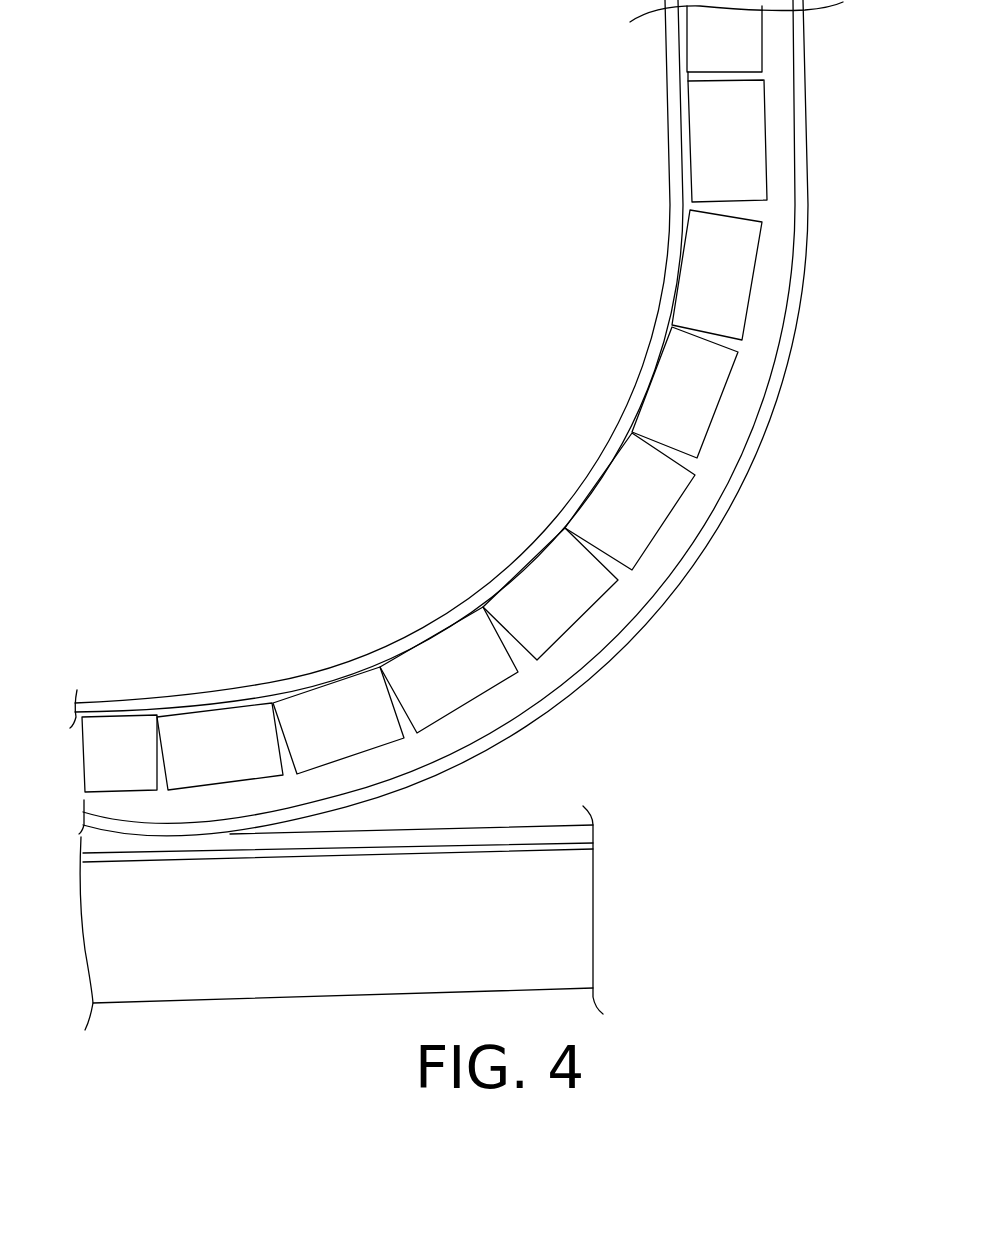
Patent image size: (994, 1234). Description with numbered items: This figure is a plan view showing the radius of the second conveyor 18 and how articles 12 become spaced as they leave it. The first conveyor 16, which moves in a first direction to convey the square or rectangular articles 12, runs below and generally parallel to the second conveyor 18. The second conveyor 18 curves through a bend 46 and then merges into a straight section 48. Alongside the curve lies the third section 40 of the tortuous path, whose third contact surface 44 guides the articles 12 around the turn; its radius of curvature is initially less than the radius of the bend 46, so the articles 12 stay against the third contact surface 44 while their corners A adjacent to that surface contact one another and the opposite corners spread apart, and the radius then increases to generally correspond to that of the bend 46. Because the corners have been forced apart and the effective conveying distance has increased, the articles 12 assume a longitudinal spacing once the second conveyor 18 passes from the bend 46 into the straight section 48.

The articles 12 is at (753, 140).
The first conveyor 16 is at (135, 975).
The second conveyor 18 is at (492, 713).
The third section 40 is at (558, 413).
The third contact surface 44 is at (506, 578).
The bend 46 is at (708, 490).
The straight section 48 is at (785, 63).
The corners A is at (688, 70).